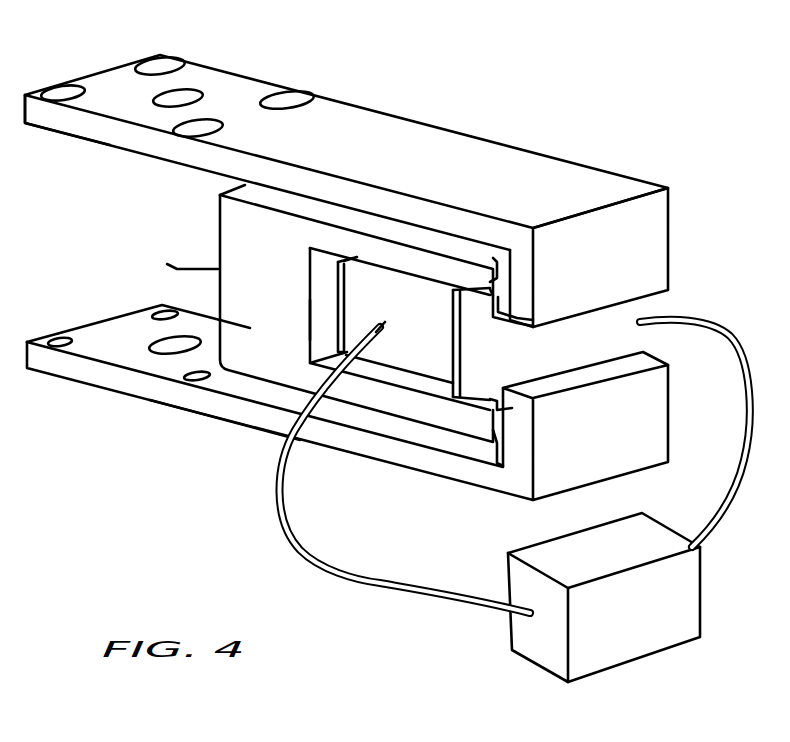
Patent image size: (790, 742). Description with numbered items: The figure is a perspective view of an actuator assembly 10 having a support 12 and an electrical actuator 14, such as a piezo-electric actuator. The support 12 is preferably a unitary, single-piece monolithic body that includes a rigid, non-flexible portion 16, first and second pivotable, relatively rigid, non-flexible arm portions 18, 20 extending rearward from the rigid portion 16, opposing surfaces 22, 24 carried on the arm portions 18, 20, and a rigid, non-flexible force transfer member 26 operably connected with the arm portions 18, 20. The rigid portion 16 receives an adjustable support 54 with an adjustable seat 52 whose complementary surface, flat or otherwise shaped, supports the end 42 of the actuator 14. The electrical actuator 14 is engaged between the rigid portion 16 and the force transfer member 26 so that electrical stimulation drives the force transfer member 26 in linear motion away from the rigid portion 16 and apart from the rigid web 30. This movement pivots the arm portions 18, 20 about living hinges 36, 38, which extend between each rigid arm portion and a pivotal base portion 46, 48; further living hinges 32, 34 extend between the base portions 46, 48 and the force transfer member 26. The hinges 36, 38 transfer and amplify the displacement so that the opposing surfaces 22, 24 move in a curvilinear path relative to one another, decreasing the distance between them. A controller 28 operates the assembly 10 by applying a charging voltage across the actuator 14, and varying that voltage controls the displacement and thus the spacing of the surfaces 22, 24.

The actuator assembly 10 is at (399, 84).
The support 12 is at (327, 212).
The electrical actuator 14 is at (432, 356).
The rigid, non-flexible portion 16 is at (226, 222).
The first pivotable arm portion 18 is at (303, 126).
The second pivotable arm portion 20 is at (218, 405).
The opposing surface 22 is at (47, 125).
The opposing surface 24 is at (110, 331).
The rigid, non-flexible force transfer member 26 is at (652, 313).
The controller 28 is at (609, 654).
The rigid web 30 is at (232, 352).
The living hinge 32 is at (530, 302).
The living hinge 34 is at (500, 396).
The living hinge 36 is at (505, 262).
The living hinge 38 is at (500, 427).
The end of the actuator 42 is at (328, 287).
The pivotal base portion 46 is at (656, 222).
The pivotal base portion 48 is at (655, 388).
The adjustable seat 52 is at (352, 318).
The adjustable support 54 is at (160, 262).